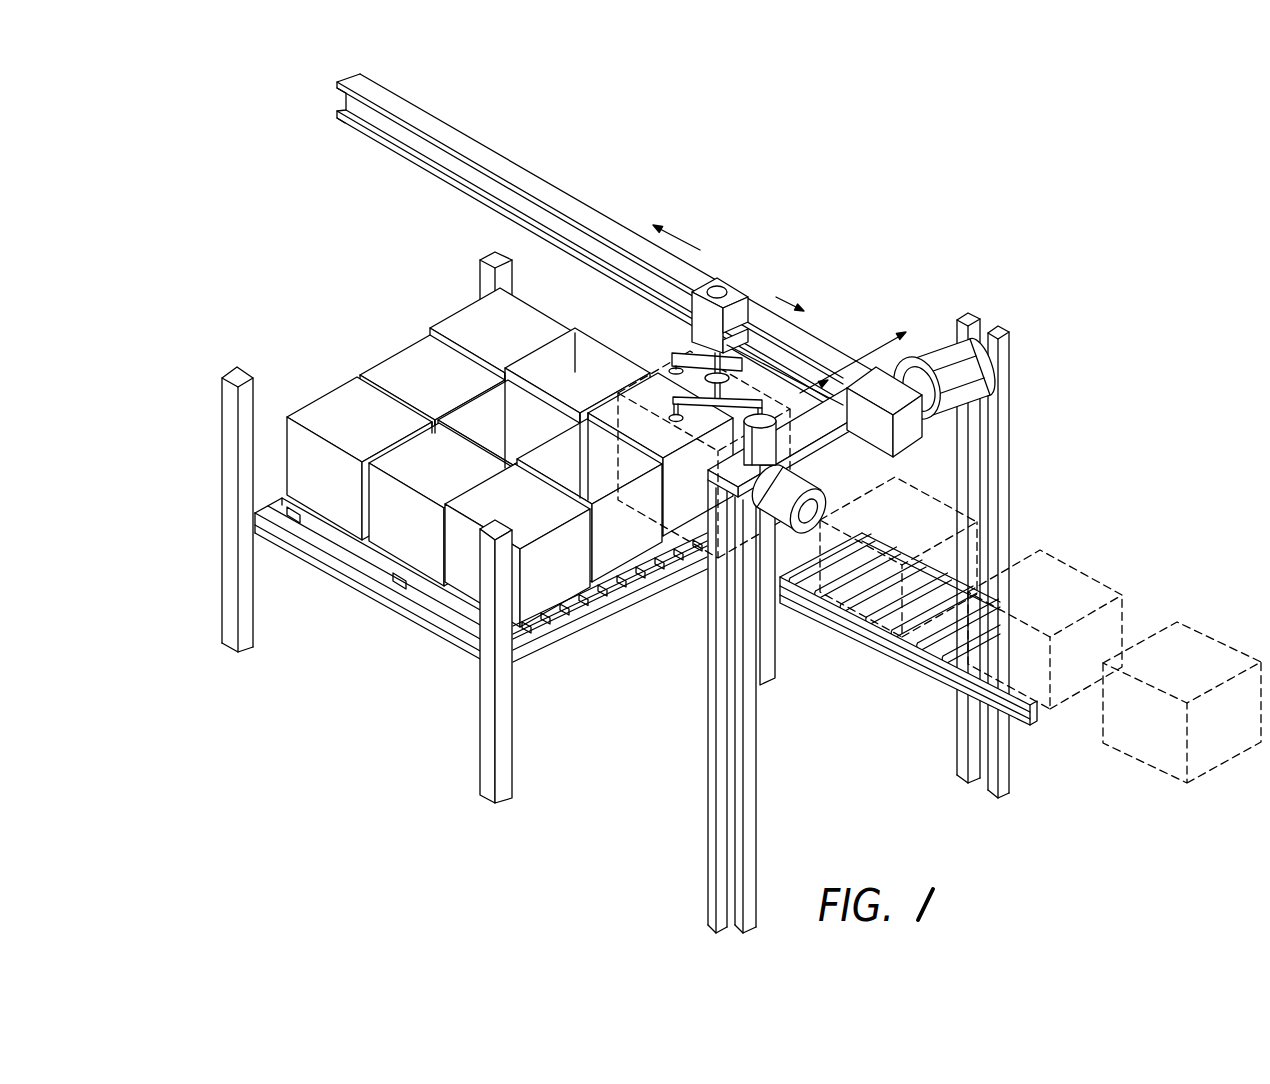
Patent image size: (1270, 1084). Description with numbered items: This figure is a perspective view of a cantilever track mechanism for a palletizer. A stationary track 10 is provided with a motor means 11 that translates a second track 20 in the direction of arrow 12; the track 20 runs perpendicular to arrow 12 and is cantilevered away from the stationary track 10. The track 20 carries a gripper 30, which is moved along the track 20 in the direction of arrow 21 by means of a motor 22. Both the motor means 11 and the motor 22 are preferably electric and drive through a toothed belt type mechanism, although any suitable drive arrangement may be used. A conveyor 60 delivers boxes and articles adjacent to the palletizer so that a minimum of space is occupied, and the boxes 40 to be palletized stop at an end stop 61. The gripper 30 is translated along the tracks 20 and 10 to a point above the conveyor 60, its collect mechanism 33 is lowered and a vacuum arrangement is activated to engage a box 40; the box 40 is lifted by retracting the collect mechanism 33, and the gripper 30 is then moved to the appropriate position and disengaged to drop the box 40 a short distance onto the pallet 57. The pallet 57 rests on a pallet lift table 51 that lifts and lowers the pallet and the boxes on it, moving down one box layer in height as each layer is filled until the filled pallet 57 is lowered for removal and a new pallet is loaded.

The stationary track 10 is at (858, 452).
The motor means 11 is at (810, 494).
The arrow 12 is at (870, 362).
The track 20 is at (448, 130).
The arrow 21 is at (722, 270).
The motor 22 is at (983, 352).
The gripper 30 is at (668, 366).
The collect mechanism 33 is at (782, 352).
The box 40 is at (381, 436).
The pallet lift table 51 is at (318, 547).
The pallet 57 is at (437, 598).
The conveyor 60 is at (904, 672).
The end stop 61 is at (805, 572).